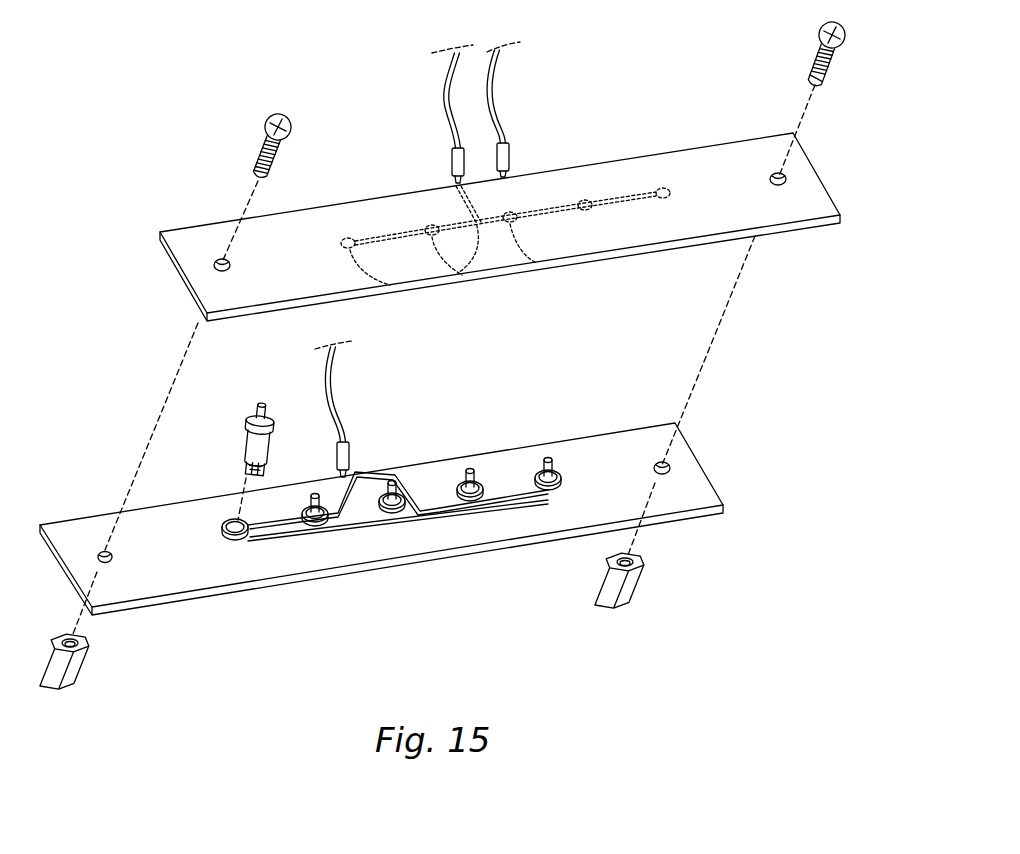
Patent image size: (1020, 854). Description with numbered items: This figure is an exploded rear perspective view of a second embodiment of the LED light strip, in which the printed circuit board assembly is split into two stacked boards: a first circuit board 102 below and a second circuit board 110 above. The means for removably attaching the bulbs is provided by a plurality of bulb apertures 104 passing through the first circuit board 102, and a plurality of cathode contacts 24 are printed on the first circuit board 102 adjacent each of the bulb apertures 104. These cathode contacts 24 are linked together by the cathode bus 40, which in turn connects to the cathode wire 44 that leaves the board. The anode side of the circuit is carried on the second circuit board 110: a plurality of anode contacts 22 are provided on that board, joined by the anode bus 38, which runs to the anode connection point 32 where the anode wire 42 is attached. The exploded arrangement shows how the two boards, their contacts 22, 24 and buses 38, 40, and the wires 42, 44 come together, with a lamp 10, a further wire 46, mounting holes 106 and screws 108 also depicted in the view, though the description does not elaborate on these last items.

The lamp assembly 10 is at (247, 433).
The anode contacts 22 is at (392, 291).
The cathode contacts 24 is at (226, 523).
The anode connection point 32 is at (453, 184).
The anode bus 38 is at (464, 280).
The cathode bus 40 is at (513, 496).
The anode wire 42 is at (446, 124).
The cathode wire 44 is at (335, 395).
The wire 46 is at (498, 97).
The first circuit board 102 is at (238, 588).
The bulb apertures 104 is at (297, 536).
The mounting hole 106 is at (212, 266).
The screw 108 is at (256, 160).
The second circuit board 110 is at (662, 232).